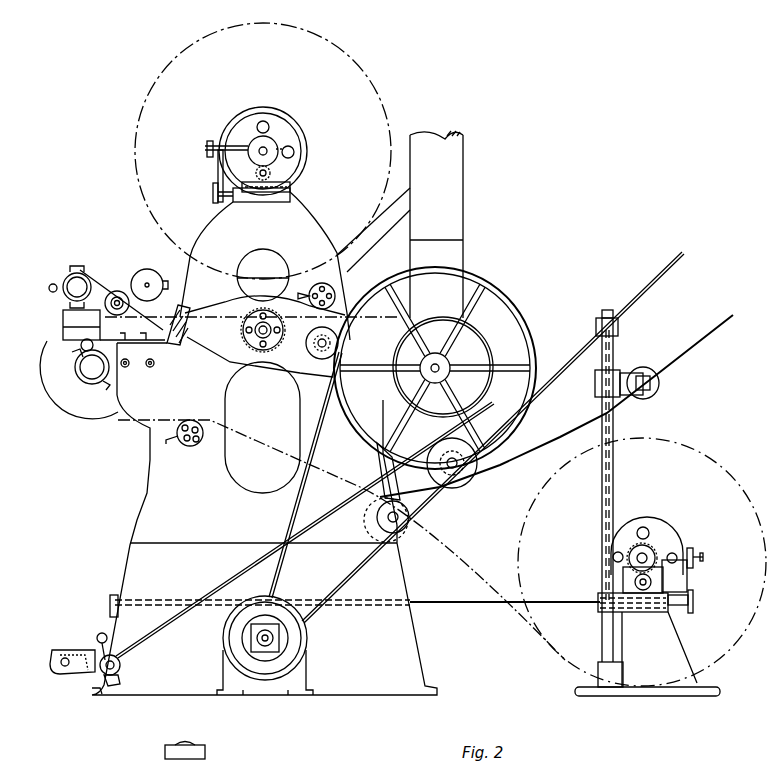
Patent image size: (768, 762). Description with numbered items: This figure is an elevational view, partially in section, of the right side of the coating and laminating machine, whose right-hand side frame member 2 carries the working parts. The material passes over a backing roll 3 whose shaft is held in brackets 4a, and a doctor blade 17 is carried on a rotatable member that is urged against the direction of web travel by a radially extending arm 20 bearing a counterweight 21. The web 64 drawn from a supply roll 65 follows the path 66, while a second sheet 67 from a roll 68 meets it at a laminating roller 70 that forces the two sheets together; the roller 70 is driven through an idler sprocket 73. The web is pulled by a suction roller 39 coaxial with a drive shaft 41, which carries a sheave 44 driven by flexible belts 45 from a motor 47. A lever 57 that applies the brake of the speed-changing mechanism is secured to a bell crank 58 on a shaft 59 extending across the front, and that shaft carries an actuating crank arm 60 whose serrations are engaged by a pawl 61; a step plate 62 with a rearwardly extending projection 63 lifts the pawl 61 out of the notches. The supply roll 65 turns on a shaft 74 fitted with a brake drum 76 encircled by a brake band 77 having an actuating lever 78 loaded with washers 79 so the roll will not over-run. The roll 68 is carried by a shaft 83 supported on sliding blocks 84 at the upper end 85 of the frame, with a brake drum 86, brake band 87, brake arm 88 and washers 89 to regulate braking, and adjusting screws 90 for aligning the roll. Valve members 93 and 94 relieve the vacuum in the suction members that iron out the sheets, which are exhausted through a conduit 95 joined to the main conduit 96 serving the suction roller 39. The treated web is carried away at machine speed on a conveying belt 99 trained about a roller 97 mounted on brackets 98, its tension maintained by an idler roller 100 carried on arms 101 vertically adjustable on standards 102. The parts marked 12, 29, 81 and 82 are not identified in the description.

The side frame member 2 is at (165, 530).
The backing roll 3 is at (72, 326).
The brackets 4a is at (78, 350).
The guide arc 12 is at (65, 393).
The doctor blade 17 is at (70, 316).
The radially extending arm 20 is at (118, 290).
The counterweight 21 is at (144, 269).
The upper roller 29 is at (60, 280).
The suction roller 39 is at (488, 333).
The drive shaft 41 is at (434, 352).
The sheave 44 is at (484, 282).
The belts 45 is at (363, 570).
The motor 47 is at (238, 633).
The lever 57 is at (247, 533).
The bell crank 58 is at (95, 690).
The shaft 59 is at (122, 666).
The actuating crank arm 60 is at (66, 668).
The pawl 61 is at (98, 633).
The step plate 62 is at (64, 650).
The rearwardly extending projection 63 is at (78, 652).
The web or sheet 64 is at (463, 562).
The supply roll 65 is at (722, 456).
The path 66 is at (210, 352).
The sheet or web 67 is at (307, 283).
The roll or coil 68 is at (380, 96).
The laminating roller 70 is at (263, 300).
The idler sprocket 73 is at (242, 300).
The shaft 74 is at (650, 553).
The brake drum 76 is at (638, 540).
The brake band 77 is at (634, 577).
The actuating lever 78 is at (698, 552).
The washers 79 is at (693, 568).
The rod 81 is at (488, 606).
The rod end block 82 is at (112, 596).
The shaft 83 is at (266, 149).
The sliding blocks 84 is at (232, 170).
The upper end 85 is at (286, 196).
The brake drum 86 is at (259, 140).
The brake band 87 is at (290, 168).
The brake arm 88 is at (221, 145).
The washers 89 is at (207, 148).
The adjusting screws 90 is at (215, 196).
The valve member 93 is at (186, 447).
The valve member 94 is at (346, 276).
The conduit 95 is at (388, 211).
The main conduit 96 is at (458, 167).
The roller 97 is at (456, 488).
The brackets 98 is at (413, 520).
The conveying belt or web 99 is at (543, 444).
The idler roller 100 is at (648, 368).
The arms 101 is at (624, 370).
The standards 102 is at (600, 484).